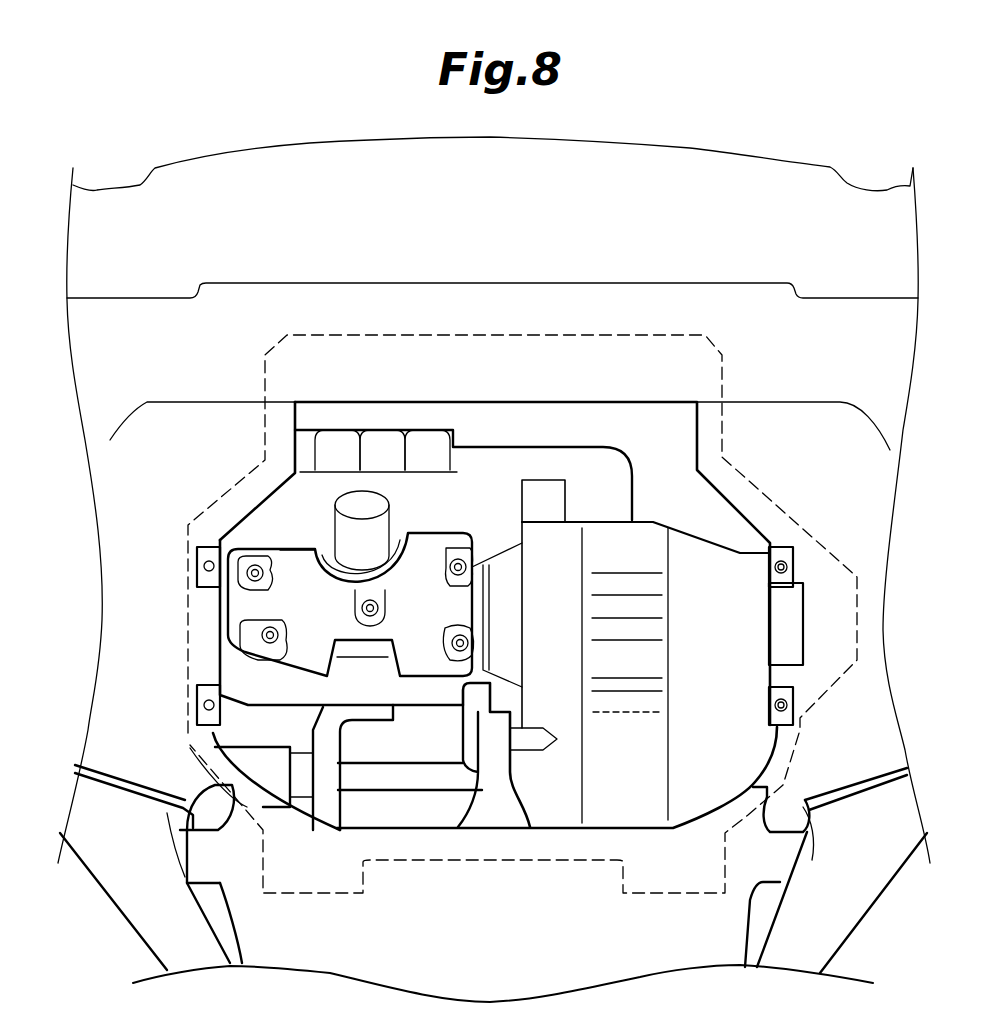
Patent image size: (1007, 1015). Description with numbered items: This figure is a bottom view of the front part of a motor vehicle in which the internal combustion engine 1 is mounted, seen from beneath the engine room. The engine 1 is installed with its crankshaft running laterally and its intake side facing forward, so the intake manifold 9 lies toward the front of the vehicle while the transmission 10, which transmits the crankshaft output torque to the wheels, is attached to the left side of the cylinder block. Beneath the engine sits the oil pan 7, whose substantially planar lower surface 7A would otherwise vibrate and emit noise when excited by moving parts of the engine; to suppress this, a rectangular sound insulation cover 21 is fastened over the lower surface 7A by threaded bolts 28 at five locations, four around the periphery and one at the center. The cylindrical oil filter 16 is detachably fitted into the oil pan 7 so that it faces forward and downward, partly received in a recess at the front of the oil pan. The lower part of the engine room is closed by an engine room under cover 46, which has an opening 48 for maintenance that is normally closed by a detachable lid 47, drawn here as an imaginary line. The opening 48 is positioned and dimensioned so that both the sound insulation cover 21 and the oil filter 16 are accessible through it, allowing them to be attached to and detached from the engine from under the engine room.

The internal combustion engine 1 is at (423, 460).
The oil pan 7 is at (233, 668).
The lower surface 7A is at (180, 743).
The intake manifold 9 is at (380, 442).
The transmission 10 is at (723, 580).
The oil filter 16 is at (353, 498).
The sound insulation cover 21 is at (250, 608).
The threaded bolts 28 is at (242, 560).
The engine room under cover 46 is at (850, 502).
The detachable lid 47 is at (722, 380).
The opening 48 is at (247, 512).